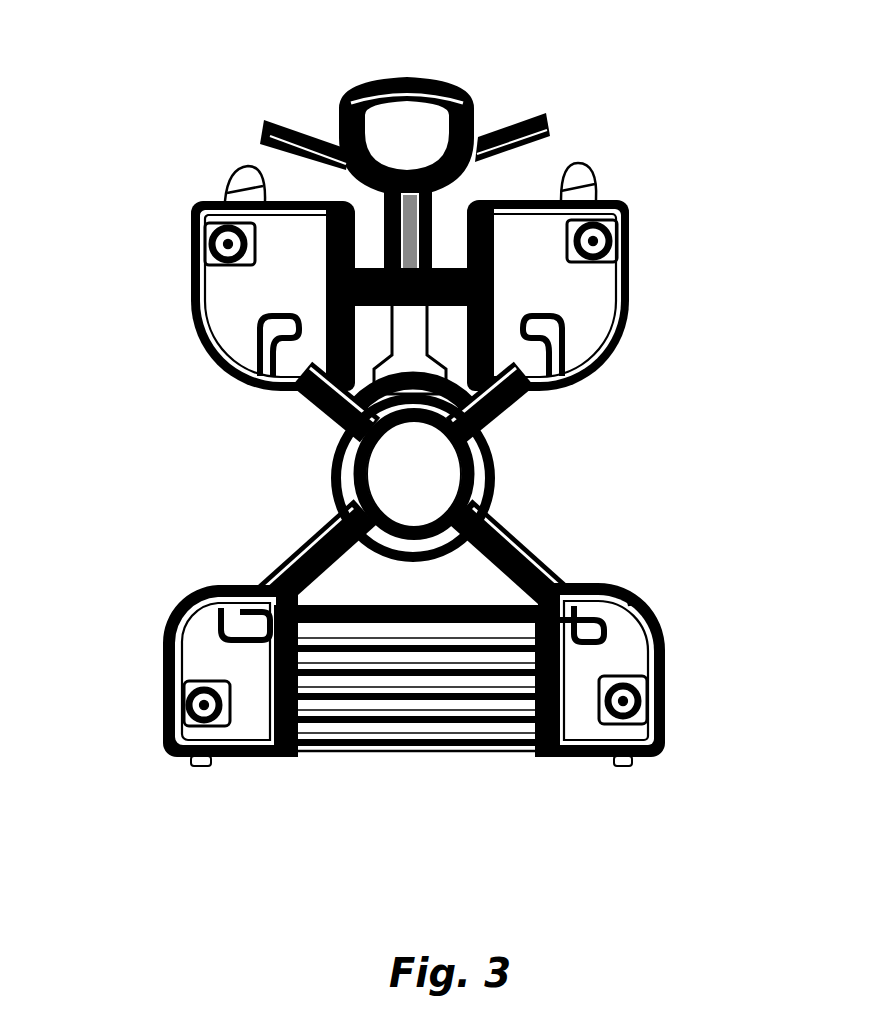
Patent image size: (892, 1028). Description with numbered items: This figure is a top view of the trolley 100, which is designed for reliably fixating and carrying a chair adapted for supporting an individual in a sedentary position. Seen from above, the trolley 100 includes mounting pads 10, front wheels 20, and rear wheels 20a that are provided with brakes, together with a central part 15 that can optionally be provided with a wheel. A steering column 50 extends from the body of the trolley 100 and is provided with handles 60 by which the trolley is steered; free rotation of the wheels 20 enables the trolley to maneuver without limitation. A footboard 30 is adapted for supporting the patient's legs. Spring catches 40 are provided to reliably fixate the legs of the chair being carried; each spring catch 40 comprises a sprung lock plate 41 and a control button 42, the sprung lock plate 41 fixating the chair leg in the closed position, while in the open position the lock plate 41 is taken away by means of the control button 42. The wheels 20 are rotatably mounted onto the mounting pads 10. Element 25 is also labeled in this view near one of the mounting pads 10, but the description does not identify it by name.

The trolley 100 is at (424, 431).
The handles 60 is at (290, 122).
The steering column 50 is at (397, 232).
The rear wheels 20a is at (580, 188).
The central part 15 is at (467, 466).
The control button 42 is at (557, 540).
The sprung lock plate 41 is at (593, 575).
The spring catches 40 is at (637, 583).
The mounting pads 10 is at (652, 612).
The side housing 25 is at (657, 717).
The front wheels 20 is at (614, 750).
The footboard 30 is at (407, 722).